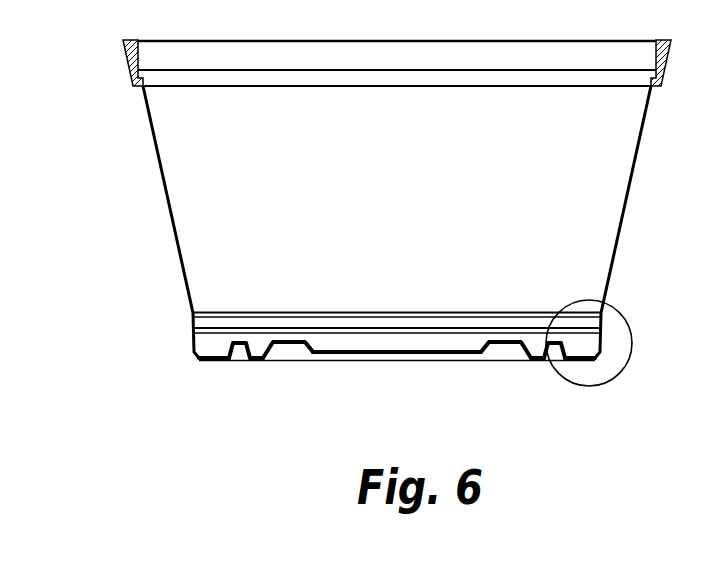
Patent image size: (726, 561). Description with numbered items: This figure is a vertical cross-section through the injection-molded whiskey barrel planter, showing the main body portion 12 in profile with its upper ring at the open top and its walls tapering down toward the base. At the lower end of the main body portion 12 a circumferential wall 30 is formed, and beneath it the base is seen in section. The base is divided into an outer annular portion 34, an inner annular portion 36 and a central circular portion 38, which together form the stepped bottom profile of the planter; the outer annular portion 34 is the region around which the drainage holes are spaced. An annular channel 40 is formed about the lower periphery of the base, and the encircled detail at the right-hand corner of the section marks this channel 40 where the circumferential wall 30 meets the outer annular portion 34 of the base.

The main body portion 12 is at (128, 143).
The circumferential wall 30 is at (336, 348).
The outer annular portion 34 is at (268, 363).
The inner annular portion 36 is at (287, 342).
The central circular portion 38 is at (395, 353).
The annular channel 40 is at (590, 363).